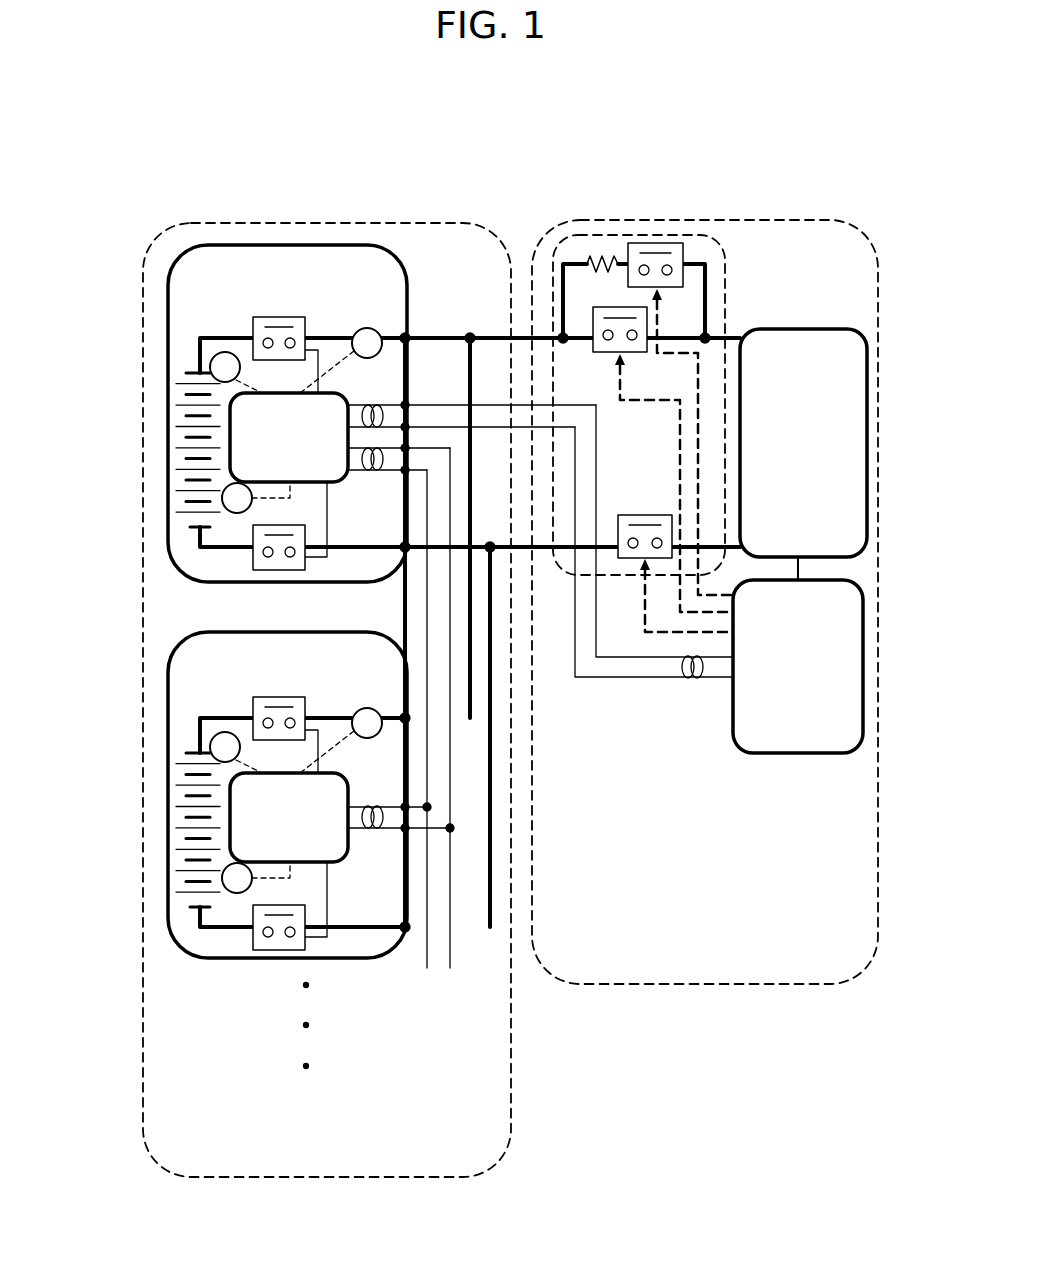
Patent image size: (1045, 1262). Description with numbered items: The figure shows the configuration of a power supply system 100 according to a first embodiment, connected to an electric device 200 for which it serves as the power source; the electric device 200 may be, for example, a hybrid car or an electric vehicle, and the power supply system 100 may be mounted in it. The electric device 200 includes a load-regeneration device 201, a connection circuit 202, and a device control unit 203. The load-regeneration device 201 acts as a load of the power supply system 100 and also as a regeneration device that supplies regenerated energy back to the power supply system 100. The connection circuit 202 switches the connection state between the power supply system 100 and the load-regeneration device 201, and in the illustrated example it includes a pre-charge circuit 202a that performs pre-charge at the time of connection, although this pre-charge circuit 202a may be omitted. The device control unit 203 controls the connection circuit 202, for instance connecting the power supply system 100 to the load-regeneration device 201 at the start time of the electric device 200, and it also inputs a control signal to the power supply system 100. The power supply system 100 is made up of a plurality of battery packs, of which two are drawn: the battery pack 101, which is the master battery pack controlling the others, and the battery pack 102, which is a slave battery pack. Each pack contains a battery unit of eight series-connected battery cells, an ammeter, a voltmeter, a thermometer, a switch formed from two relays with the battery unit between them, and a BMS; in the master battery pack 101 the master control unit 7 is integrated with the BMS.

The master control unit 7 is at (314, 471).
The power supply system 100 is at (460, 225).
The battery pack 101 is at (175, 290).
The battery pack 102 is at (172, 655).
The electric device 200 is at (832, 222).
The load-regeneration device 201 is at (770, 330).
The connection circuit 202 is at (727, 257).
The pre-charge circuit 202a is at (620, 240).
The device control unit 203 is at (812, 757).